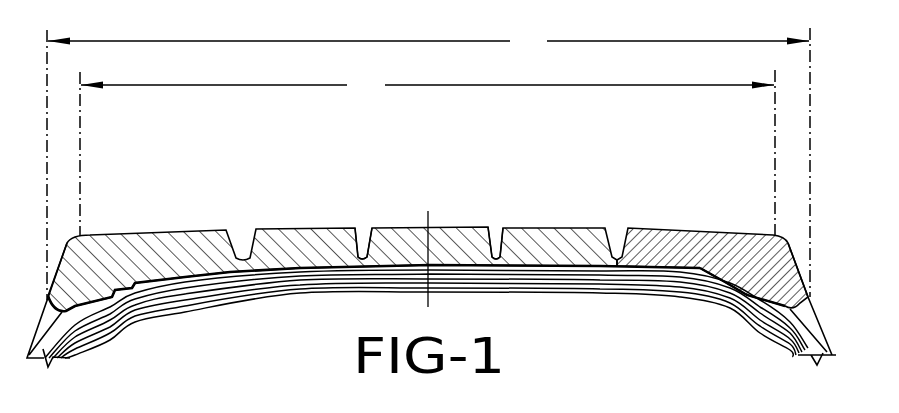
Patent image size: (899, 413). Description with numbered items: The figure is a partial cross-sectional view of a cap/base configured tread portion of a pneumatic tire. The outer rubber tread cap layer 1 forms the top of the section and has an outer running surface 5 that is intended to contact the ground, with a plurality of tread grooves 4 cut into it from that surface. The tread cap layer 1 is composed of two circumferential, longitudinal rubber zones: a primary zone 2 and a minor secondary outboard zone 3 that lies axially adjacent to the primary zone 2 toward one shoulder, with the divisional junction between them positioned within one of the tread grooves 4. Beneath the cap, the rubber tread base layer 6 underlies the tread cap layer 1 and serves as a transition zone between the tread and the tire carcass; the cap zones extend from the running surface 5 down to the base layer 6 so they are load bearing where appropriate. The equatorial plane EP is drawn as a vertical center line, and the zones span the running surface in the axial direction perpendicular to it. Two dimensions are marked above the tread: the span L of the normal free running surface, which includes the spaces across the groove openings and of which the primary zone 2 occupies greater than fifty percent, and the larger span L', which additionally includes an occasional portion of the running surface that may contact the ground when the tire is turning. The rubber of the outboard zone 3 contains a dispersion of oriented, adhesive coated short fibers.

The outer rubber tread cap layer 1 is at (179, 204).
The primary zone 2 is at (394, 246).
The minor secondary outboard zone 3 is at (697, 257).
The tread grooves 4 is at (361, 250).
The outer running surface 5 is at (285, 228).
The rubber tread base layer 6 is at (527, 272).
The equatorial plane EP is at (427, 246).
The span of the normal free running surface L is at (427, 153).
The span including occasional running surface portion L' is at (428, 164).